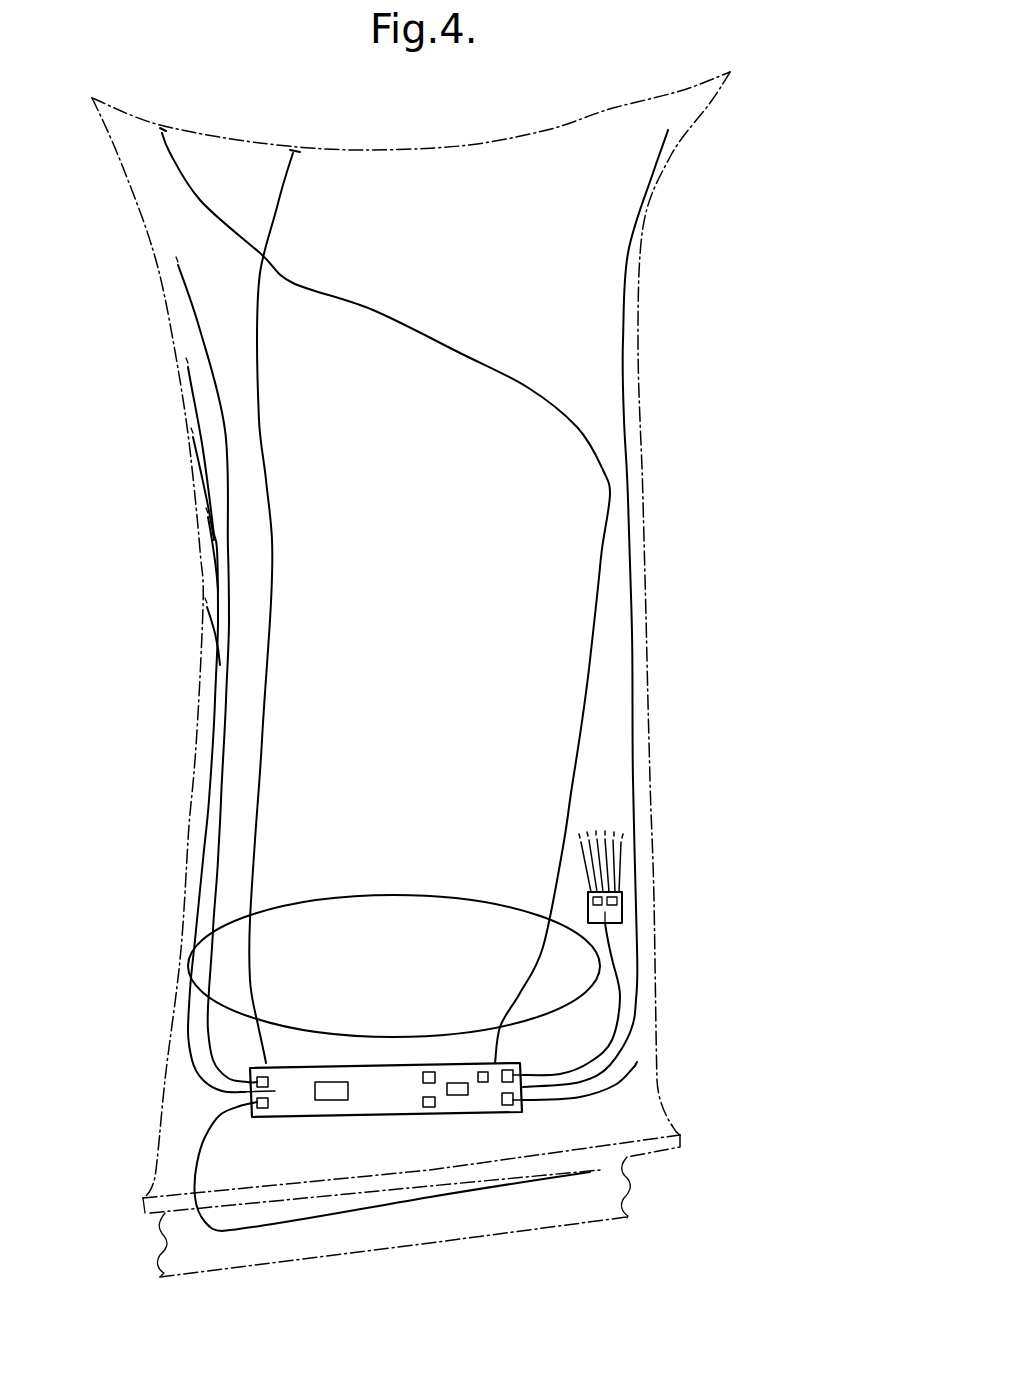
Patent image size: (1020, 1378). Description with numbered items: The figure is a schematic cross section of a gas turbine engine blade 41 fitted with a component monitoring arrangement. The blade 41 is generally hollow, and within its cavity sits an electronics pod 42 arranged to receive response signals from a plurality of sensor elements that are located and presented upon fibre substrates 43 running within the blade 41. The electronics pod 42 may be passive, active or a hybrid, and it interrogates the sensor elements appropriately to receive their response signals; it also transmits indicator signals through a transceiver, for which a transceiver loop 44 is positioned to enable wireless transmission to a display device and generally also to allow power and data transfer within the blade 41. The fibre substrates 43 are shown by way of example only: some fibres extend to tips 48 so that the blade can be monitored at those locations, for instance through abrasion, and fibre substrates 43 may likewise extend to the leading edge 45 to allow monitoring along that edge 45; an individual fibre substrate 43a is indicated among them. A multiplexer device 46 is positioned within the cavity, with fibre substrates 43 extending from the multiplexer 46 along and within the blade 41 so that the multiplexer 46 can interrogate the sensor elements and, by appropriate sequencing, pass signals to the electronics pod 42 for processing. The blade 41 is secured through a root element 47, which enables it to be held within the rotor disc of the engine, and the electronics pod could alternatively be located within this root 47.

The blade 41 is at (700, 334).
The electronics pod 42 is at (285, 1108).
The fibre substrates 43 is at (597, 635).
The sensor strip 43a is at (217, 713).
The transceiver loop 44 is at (193, 957).
The leading edge 45 is at (182, 292).
The multiplexer device 46 is at (617, 912).
The root element 47 is at (387, 1253).
The tips 48 is at (166, 128).